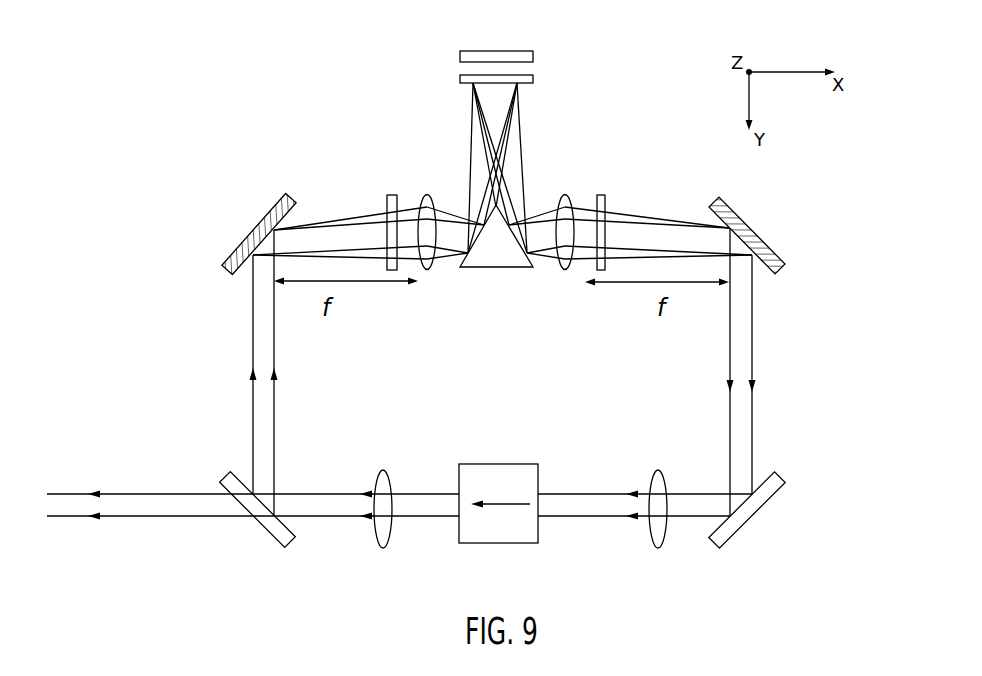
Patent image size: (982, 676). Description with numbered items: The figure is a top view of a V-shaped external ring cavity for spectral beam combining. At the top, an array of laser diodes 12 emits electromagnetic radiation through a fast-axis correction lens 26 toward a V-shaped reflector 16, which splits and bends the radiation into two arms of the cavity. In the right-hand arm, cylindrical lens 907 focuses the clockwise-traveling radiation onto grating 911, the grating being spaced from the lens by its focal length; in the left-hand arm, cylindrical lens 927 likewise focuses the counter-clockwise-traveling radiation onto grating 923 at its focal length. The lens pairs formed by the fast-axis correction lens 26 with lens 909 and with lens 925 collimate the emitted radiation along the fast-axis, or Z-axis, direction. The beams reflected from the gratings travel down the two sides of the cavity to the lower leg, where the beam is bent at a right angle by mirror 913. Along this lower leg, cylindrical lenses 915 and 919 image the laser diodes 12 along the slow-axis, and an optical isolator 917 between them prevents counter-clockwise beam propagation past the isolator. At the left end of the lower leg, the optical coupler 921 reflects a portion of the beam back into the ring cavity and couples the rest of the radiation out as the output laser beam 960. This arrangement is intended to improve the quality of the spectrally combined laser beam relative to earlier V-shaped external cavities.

The array of laser diodes 12 is at (533, 57).
The fast-axis correction lens 26 is at (533, 78).
The V-shaped reflector 16 is at (496, 268).
The cylindrical lens 907 is at (565, 195).
The lens 909 is at (601, 196).
The grating 911 is at (766, 205).
The mirror 913 is at (748, 524).
The cylindrical lens 915 is at (658, 548).
The optical isolator 917 is at (503, 543).
The cylindrical lens 919 is at (383, 548).
The optical coupler 921 is at (272, 532).
The grating 923 is at (251, 227).
The lens 925 is at (392, 195).
The cylindrical lens 927 is at (428, 195).
The laser beam 960 is at (72, 494).